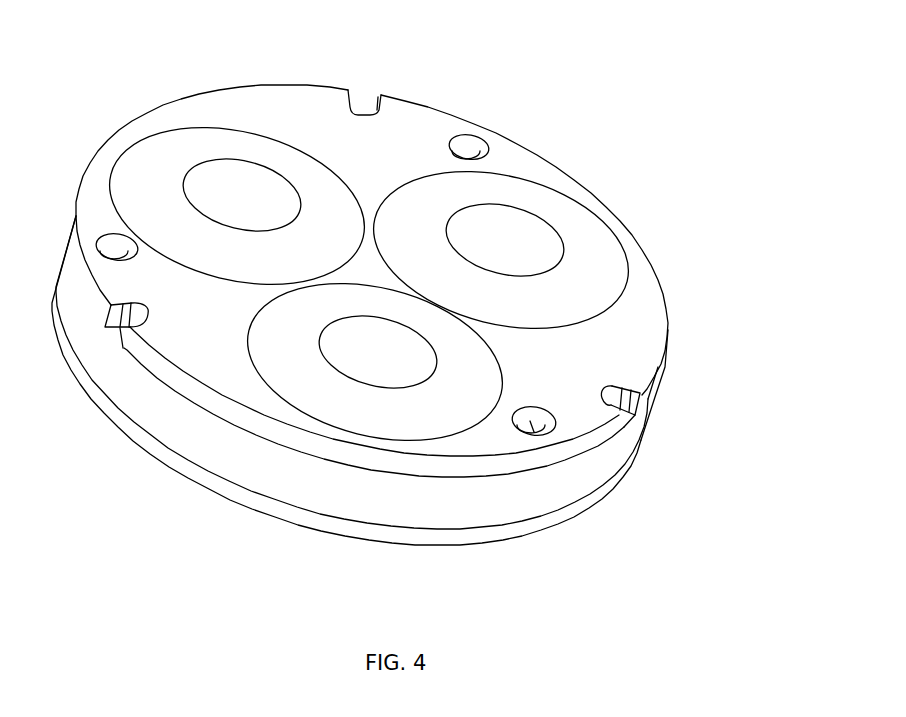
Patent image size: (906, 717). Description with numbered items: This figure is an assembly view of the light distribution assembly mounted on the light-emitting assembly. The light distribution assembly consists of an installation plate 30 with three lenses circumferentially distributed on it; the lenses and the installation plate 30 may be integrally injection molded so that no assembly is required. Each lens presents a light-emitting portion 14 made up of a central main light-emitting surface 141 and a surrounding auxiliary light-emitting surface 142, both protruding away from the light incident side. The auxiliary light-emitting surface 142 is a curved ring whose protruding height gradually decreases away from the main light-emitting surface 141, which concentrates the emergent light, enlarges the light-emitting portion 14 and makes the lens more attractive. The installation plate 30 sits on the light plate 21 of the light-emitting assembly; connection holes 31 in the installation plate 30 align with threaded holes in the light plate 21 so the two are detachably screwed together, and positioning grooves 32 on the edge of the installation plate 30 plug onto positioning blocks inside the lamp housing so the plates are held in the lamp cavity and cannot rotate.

The light-emitting portion 14 is at (385, 263).
The main light-emitting surface 141 is at (512, 222).
The auxiliary light-emitting surface 142 is at (597, 258).
The light plate 21 is at (583, 480).
The installation plate 30 is at (638, 312).
The connection hole 31 is at (470, 140).
The positioning groove 32 is at (363, 100).